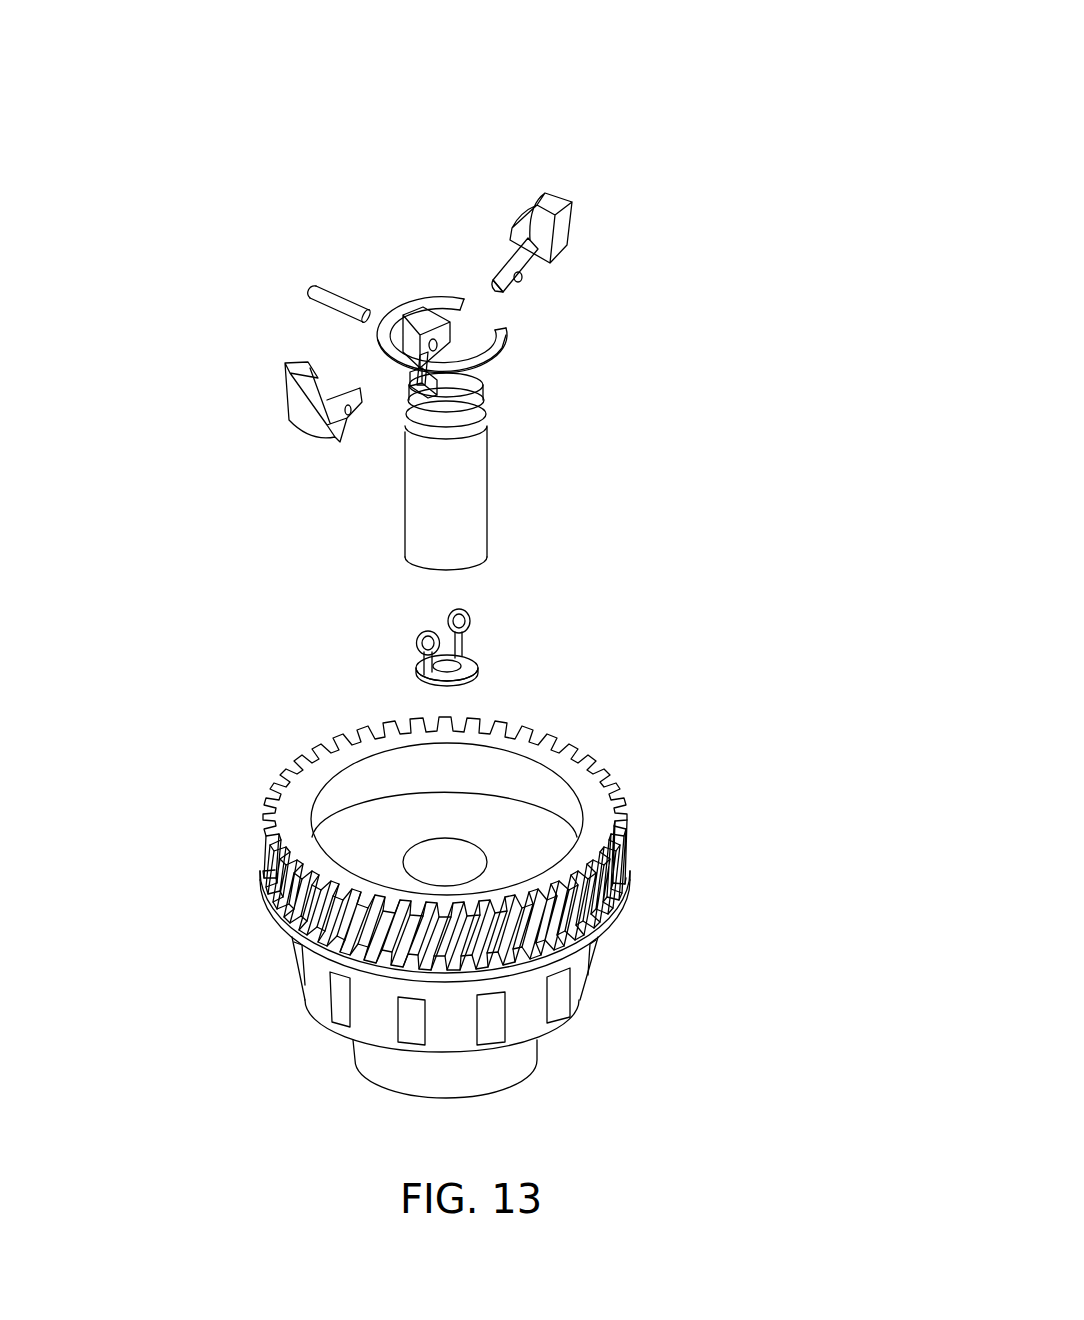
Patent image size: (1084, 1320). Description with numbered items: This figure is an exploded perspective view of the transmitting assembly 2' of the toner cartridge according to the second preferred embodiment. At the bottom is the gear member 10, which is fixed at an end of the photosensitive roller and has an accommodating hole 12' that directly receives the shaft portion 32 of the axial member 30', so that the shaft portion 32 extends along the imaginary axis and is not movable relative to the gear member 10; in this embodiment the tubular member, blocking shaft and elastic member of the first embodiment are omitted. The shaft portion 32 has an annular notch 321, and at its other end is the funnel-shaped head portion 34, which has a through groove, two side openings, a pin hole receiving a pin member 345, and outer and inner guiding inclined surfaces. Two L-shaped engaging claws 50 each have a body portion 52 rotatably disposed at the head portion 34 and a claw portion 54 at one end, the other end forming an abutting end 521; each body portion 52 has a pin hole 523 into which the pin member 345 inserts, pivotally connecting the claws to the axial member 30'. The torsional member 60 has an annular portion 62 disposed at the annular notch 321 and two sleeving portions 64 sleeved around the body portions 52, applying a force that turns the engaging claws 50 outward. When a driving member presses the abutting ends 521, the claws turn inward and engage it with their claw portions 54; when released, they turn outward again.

The transmitting assembly 2' is at (690, 81).
The gear member 10 is at (636, 961).
The accommodating hole 12' is at (530, 803).
The axial member 30' is at (440, 390).
The shaft portion 32 is at (443, 510).
The annular notch 321 is at (423, 413).
The head portion 34 is at (427, 328).
The pin member 345 is at (335, 297).
The engaging claw 50 is at (264, 383).
The body portion 52 is at (531, 258).
The abutting end 521 is at (490, 280).
The pin hole 523 is at (521, 281).
The claw portion 54 is at (573, 227).
The torsional member 60 is at (497, 648).
The annular portion 62 is at (415, 665).
The sleeving portion 64 is at (417, 633).